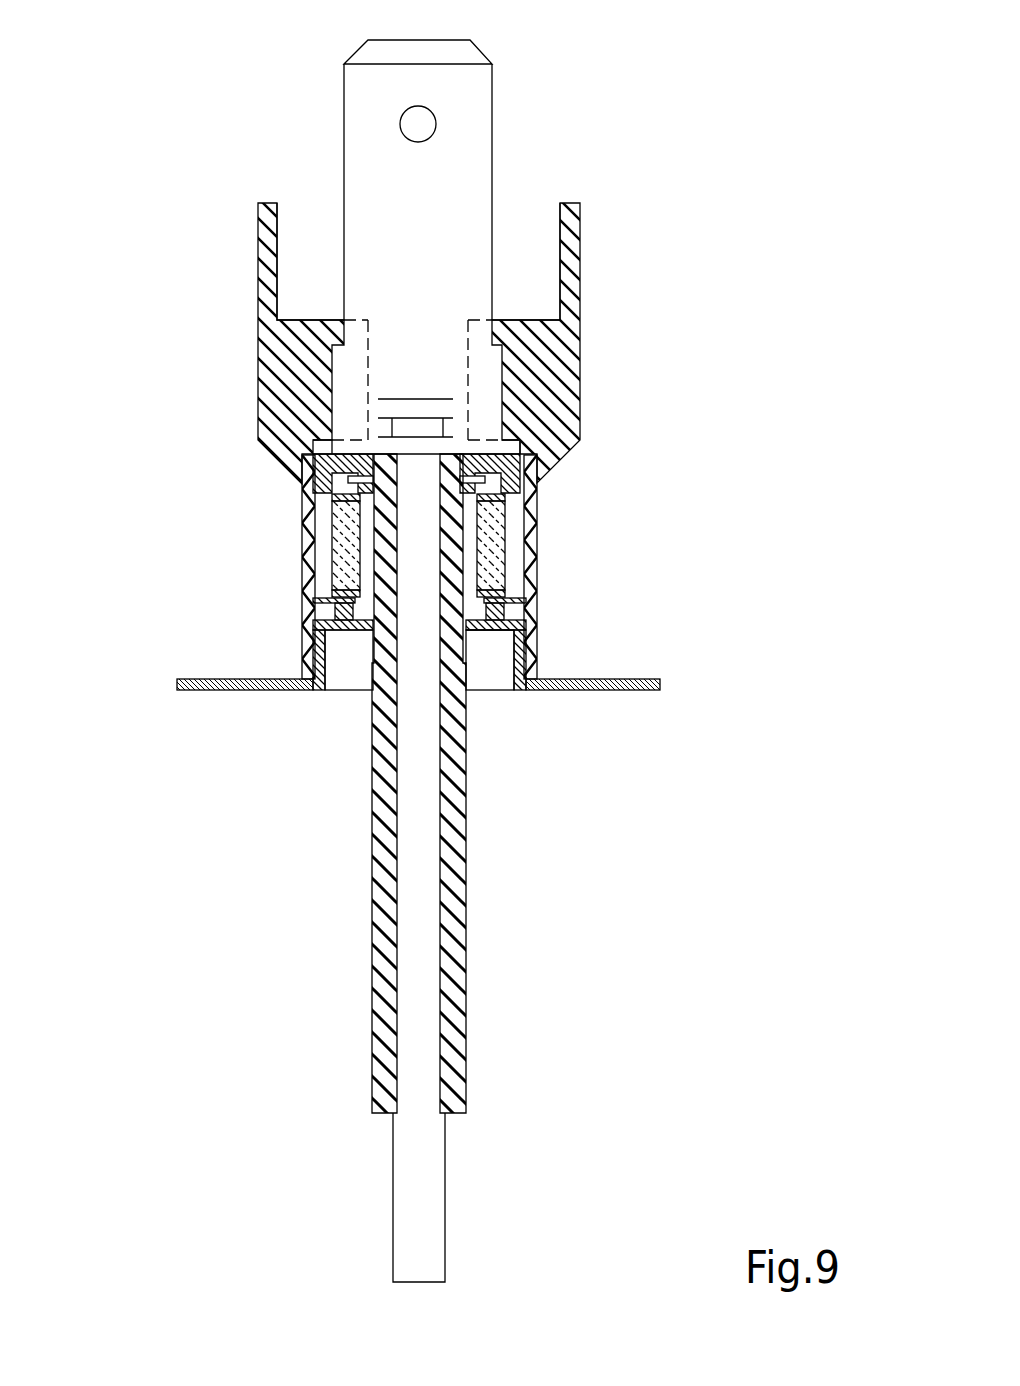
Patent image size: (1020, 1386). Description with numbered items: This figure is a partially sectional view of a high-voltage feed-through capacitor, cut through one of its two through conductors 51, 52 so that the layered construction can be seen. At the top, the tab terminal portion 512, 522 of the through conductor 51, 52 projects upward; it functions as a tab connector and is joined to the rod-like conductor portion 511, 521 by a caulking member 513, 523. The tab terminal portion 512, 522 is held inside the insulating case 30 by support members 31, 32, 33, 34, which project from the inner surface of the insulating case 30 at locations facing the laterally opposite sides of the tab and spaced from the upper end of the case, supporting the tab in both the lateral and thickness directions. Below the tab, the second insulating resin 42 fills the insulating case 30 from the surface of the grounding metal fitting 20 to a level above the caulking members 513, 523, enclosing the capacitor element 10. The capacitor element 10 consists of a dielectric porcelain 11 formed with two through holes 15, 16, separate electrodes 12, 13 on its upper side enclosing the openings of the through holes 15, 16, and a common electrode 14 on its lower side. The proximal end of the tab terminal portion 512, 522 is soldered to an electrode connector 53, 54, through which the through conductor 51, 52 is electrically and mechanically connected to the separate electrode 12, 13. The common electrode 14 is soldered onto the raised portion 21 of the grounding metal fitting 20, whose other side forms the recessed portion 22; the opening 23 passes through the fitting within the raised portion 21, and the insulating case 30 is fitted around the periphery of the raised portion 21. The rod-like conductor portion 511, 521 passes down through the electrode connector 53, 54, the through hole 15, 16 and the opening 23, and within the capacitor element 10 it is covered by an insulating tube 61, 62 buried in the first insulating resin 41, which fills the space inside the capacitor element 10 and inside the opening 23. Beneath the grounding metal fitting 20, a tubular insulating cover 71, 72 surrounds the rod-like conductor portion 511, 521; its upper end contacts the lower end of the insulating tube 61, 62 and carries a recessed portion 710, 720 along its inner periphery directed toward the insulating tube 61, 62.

The through conductor 51 is at (492, 35).
The through conductor 52 is at (497, 62).
The tab terminal portion 512 is at (335, 192).
The tab terminal portion 522 is at (353, 163).
The caulking member 513 is at (525, 380).
The caulking member 523 is at (453, 404).
The rod-like conductor portion 511 is at (495, 1197).
The rod-like conductor portion 521 is at (422, 1179).
The insulating case 30 is at (584, 204).
The support member 32 is at (247, 261).
The support member 34 is at (316, 320).
The support member 31 is at (592, 261).
The support member 33 is at (528, 320).
The second insulating resin 42 is at (503, 488).
The electrode connector 53 is at (327, 460).
The electrode connector 54 is at (350, 470).
The separate electrode 12 is at (480, 472).
The separate electrode 13 is at (512, 465).
The capacitor element 10 is at (510, 547).
The through hole 15 is at (341, 542).
The through hole 16 is at (345, 548).
The dielectric porcelain 11 is at (503, 583).
The raised portion 21 is at (348, 607).
The common electrode 14 is at (503, 600).
The opening 23 is at (345, 620).
The recessed portion 22 is at (333, 683).
The recessed portion 710 is at (284, 704).
The recessed portion 720 is at (368, 628).
The insulating tube 61 is at (530, 705).
The insulating tube 62 is at (455, 650).
The first insulating resin 41 is at (472, 640).
The grounding metal fitting 20 is at (662, 680).
The insulating cover 71 is at (344, 783).
The insulating cover 72 is at (374, 870).